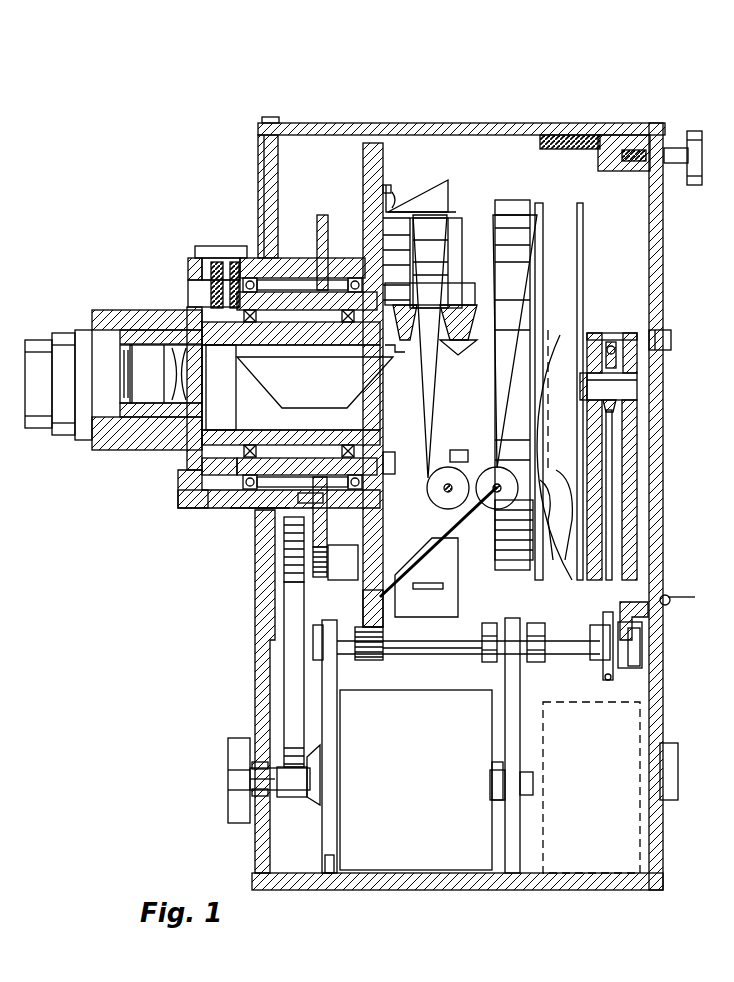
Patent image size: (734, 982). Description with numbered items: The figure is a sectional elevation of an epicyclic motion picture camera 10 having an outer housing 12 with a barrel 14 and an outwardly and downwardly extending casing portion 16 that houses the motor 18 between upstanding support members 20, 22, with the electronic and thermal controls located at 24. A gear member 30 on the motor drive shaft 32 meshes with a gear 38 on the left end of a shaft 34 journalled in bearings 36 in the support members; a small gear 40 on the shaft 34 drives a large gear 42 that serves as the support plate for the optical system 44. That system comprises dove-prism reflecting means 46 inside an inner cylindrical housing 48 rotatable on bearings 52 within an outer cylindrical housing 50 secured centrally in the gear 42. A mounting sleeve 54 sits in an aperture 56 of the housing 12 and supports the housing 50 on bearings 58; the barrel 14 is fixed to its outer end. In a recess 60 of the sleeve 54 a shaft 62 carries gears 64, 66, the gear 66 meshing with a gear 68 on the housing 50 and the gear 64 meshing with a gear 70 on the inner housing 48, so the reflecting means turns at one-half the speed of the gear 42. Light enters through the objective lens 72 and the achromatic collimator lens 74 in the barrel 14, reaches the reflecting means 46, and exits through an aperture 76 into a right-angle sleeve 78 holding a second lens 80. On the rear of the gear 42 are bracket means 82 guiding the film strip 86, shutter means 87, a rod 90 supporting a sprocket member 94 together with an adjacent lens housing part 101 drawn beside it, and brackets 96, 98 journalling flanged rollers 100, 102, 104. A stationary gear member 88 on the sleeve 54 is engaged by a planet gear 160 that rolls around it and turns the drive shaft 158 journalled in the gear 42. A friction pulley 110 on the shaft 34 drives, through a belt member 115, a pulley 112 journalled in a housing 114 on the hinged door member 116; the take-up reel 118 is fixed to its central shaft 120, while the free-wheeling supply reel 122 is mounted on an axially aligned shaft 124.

The epicyclic motion picture camera 10 is at (188, 500).
The outer housing 12 is at (462, 130).
The barrel 14 is at (108, 445).
The casing portion 16 is at (256, 850).
The motor 18 is at (440, 880).
The support member 20 is at (322, 844).
The support member 22 is at (512, 852).
The electronic and thermal controls location 24 is at (630, 820).
The gear member 30 is at (289, 792).
The drive shaft 32 is at (305, 785).
The shaft 34 is at (432, 656).
The bearings 36 is at (333, 656).
The gear 38 is at (292, 664).
The gear 40 is at (372, 660).
The gear 42 is at (363, 606).
The optical system 44 is at (388, 455).
The reflecting means 46 is at (275, 372).
The inner cylindrical housing 48 is at (290, 432).
The outer cylindrical housing 50 is at (228, 520).
The bearings 52 is at (212, 466).
The mounting sleeve 54 is at (253, 509).
The aperture 56 is at (262, 510).
The bearings 58 is at (340, 485).
The recess 60 is at (192, 262).
The shaft 62 is at (200, 290).
The gear 64 is at (216, 262).
The gear 66 is at (235, 262).
The gear 68 is at (238, 335).
The gear 70 is at (205, 330).
The objective lens 72 is at (108, 325).
The lens means 74 is at (152, 352).
The aperture 76 is at (392, 340).
The sleeve 78 is at (488, 335).
The second lens 80 is at (422, 385).
The bracket means 82 is at (396, 198).
The film strip 86 is at (430, 210).
The shutter means 87 is at (444, 574).
The stationary gear member 88 is at (320, 218).
The shaft 90 is at (370, 230).
The sprocket member 94 is at (437, 272).
The bracket 96 is at (500, 535).
The bracket 98 is at (408, 545).
The flanged roller 100 is at (525, 565).
The lens housing 101 is at (450, 235).
The flanged roller 102 is at (445, 500).
The flanged roller 104 is at (568, 562).
The friction type pulley member 110 is at (640, 675).
The pulley 112 is at (640, 353).
The housing 114 is at (635, 442).
The belt member 115 is at (614, 516).
The hinged door member 116 is at (660, 262).
The film take-up reel 118 is at (584, 262).
The central shaft 120 is at (640, 383).
The film supply reel 122 is at (537, 205).
The shaft 124 is at (562, 370).
The drive shaft 158 is at (300, 580).
The planet gear 160 is at (318, 570).